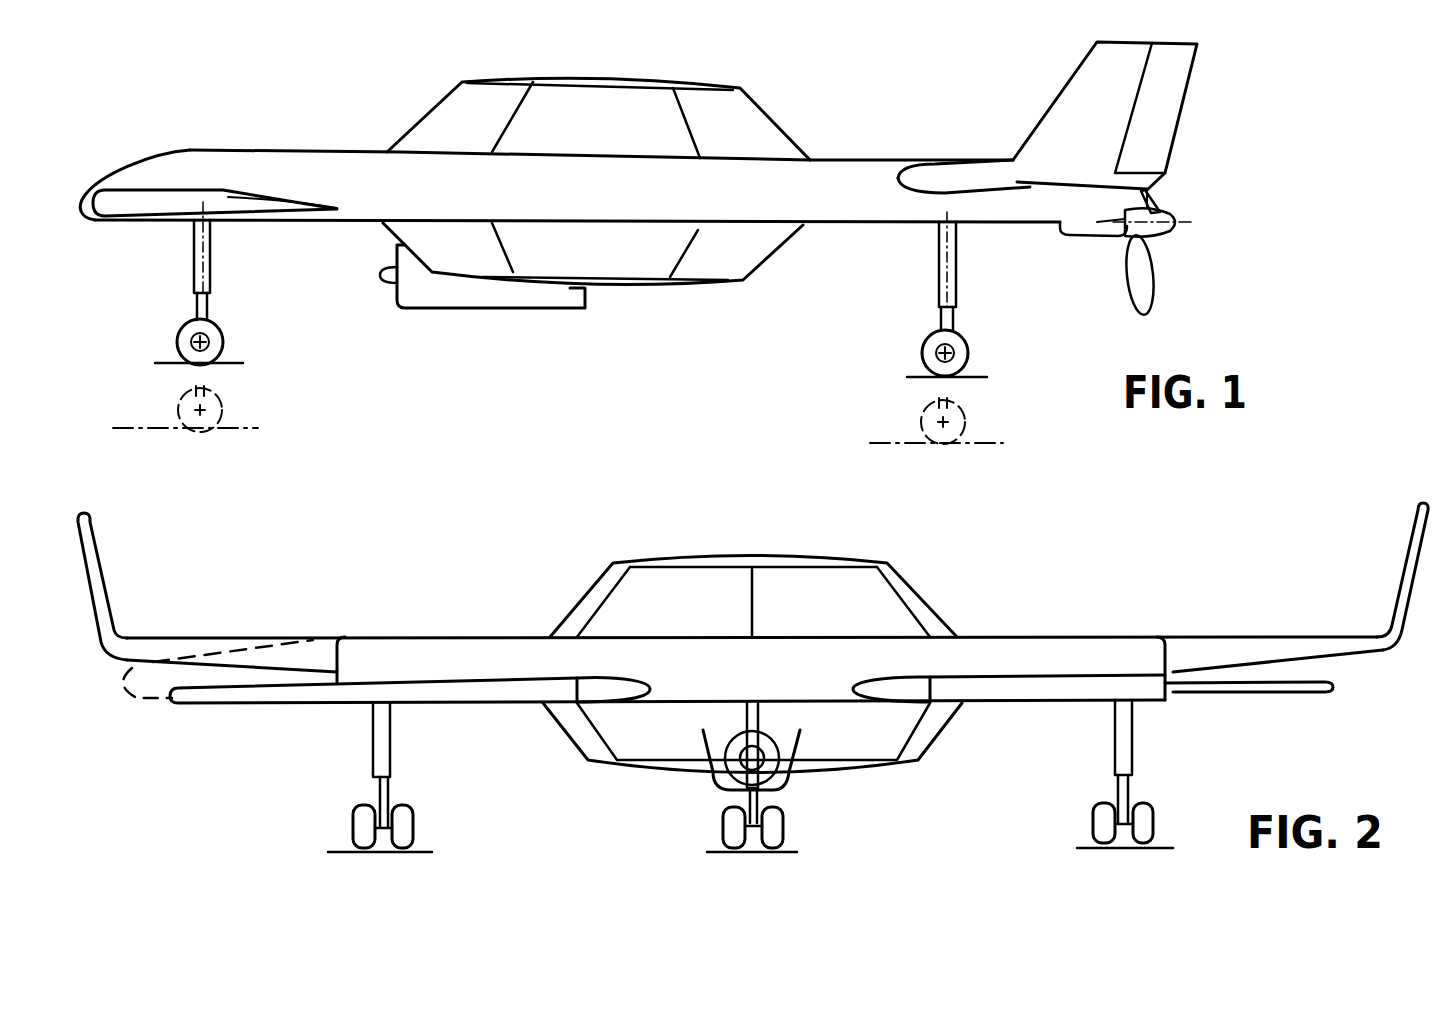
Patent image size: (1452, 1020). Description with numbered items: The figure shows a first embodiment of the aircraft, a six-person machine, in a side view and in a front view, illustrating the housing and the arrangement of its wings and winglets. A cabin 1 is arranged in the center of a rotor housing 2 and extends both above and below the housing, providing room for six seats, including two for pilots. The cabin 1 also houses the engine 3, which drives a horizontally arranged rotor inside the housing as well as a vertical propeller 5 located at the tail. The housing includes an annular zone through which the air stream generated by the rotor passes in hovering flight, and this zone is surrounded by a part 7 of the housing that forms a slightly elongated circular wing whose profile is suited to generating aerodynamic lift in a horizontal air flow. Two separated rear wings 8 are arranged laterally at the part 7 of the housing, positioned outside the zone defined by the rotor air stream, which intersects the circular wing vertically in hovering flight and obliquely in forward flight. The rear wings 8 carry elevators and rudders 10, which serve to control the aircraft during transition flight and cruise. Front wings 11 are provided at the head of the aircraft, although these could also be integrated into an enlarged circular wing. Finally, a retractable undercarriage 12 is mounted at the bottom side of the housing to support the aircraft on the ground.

In FIG. 1, the cabin 1 is at (748, 130).
In FIG. 2, the cabin 1 is at (863, 617).
In FIG. 1, the rotor housing 2 is at (368, 178).
In FIG. 2, the rotor housing 2 is at (1028, 655).
In FIG. 1, the engine 3 is at (472, 295).
In FIG. 2, the engine 3 is at (733, 763).
In FIG. 1, the vertical propeller 5 is at (1172, 238).
In FIG. 1, the part of the housing 7 is at (125, 177).
In FIG. 1, the rear wing 8 is at (952, 177).
In FIG. 2, the rear wing 8 is at (142, 647).
In FIG. 1, the rudder 10 is at (1167, 105).
In FIG. 1, the front wing 11 is at (175, 202).
In FIG. 2, the front wing 11 is at (447, 692).
In FIG. 1, the retractable undercarriage 12 is at (170, 327).
In FIG. 2, the retractable undercarriage 12 is at (797, 822).